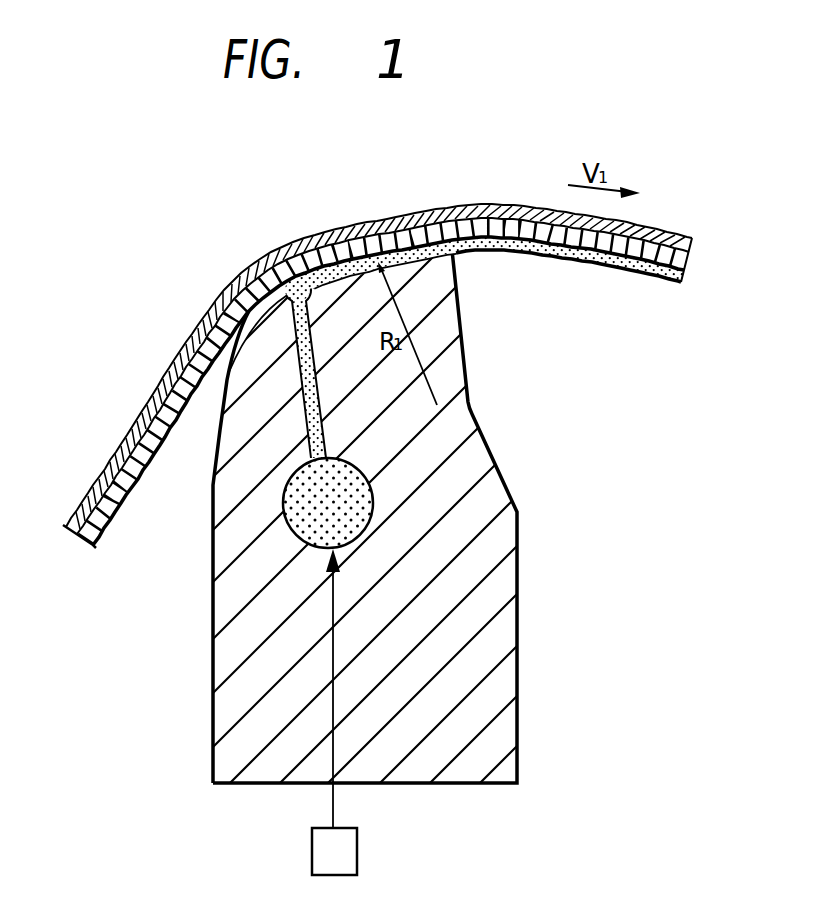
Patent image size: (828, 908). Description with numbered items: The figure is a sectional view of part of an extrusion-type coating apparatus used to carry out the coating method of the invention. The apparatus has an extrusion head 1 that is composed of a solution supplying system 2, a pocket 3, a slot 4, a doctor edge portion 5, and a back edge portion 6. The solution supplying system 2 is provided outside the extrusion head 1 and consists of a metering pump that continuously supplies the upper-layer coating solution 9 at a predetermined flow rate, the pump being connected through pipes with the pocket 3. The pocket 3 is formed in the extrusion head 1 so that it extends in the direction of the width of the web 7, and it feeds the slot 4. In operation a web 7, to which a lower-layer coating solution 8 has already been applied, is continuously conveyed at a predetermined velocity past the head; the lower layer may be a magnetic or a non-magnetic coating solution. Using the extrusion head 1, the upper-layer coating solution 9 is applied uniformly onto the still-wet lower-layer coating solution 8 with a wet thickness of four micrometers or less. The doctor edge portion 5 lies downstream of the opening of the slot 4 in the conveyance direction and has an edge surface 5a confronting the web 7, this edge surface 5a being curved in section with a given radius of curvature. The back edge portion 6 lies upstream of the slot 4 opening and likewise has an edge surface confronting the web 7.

The extrusion head 1 is at (414, 513).
The solution supplying system 2 is at (347, 857).
The pocket 3 is at (352, 474).
The slot 4 is at (317, 386).
The doctor edge portion 5 is at (442, 306).
The edge surface 5a is at (390, 230).
The back edge portion 6 is at (243, 380).
The web 7 is at (273, 259).
The lower-layer coating solution 8 is at (226, 313).
The upper-layer coating solution 9 is at (628, 270).